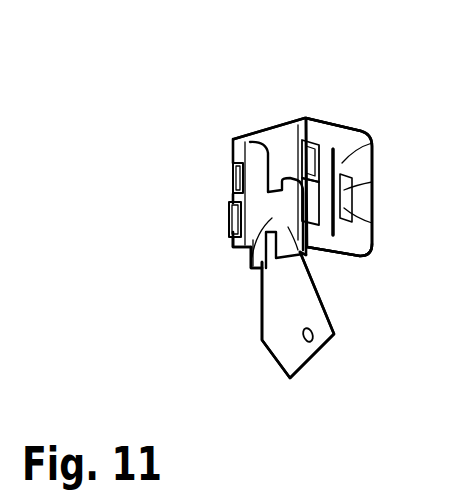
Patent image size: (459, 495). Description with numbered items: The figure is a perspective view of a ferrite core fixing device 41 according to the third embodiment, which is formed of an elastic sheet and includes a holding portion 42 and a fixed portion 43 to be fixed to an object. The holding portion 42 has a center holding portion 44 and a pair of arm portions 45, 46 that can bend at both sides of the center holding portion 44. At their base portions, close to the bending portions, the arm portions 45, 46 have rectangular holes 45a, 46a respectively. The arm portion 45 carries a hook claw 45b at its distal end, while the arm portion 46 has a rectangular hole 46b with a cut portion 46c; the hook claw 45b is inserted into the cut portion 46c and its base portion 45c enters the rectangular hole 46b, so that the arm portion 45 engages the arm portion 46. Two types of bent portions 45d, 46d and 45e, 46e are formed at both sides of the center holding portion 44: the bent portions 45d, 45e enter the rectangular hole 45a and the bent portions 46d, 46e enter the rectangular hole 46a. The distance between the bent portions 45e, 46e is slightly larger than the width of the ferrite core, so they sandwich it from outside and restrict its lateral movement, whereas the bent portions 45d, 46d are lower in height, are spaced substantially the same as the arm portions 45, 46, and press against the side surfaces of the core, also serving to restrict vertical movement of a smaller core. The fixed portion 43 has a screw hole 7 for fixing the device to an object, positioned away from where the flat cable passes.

The ferrite core fixing device 41 is at (194, 120).
The holding portion 42 is at (302, 110).
The fixed portion 43 is at (267, 365).
The center holding portion 44 is at (283, 136).
The arm portion 45 is at (248, 137).
The rectangular hole 45a is at (233, 232).
The hook claw 45b is at (301, 262).
The base portion 45c is at (253, 266).
The bent portion 45d is at (232, 181).
The bent portion 45e is at (229, 212).
The arm portion 46 is at (336, 126).
The rectangular hole 46a is at (372, 143).
The rectangular hole 46b is at (372, 182).
The cut portion 46c is at (372, 253).
The bent portion 46d is at (336, 150).
The bent portion 46e is at (372, 223).
The screw hole 7 is at (313, 340).